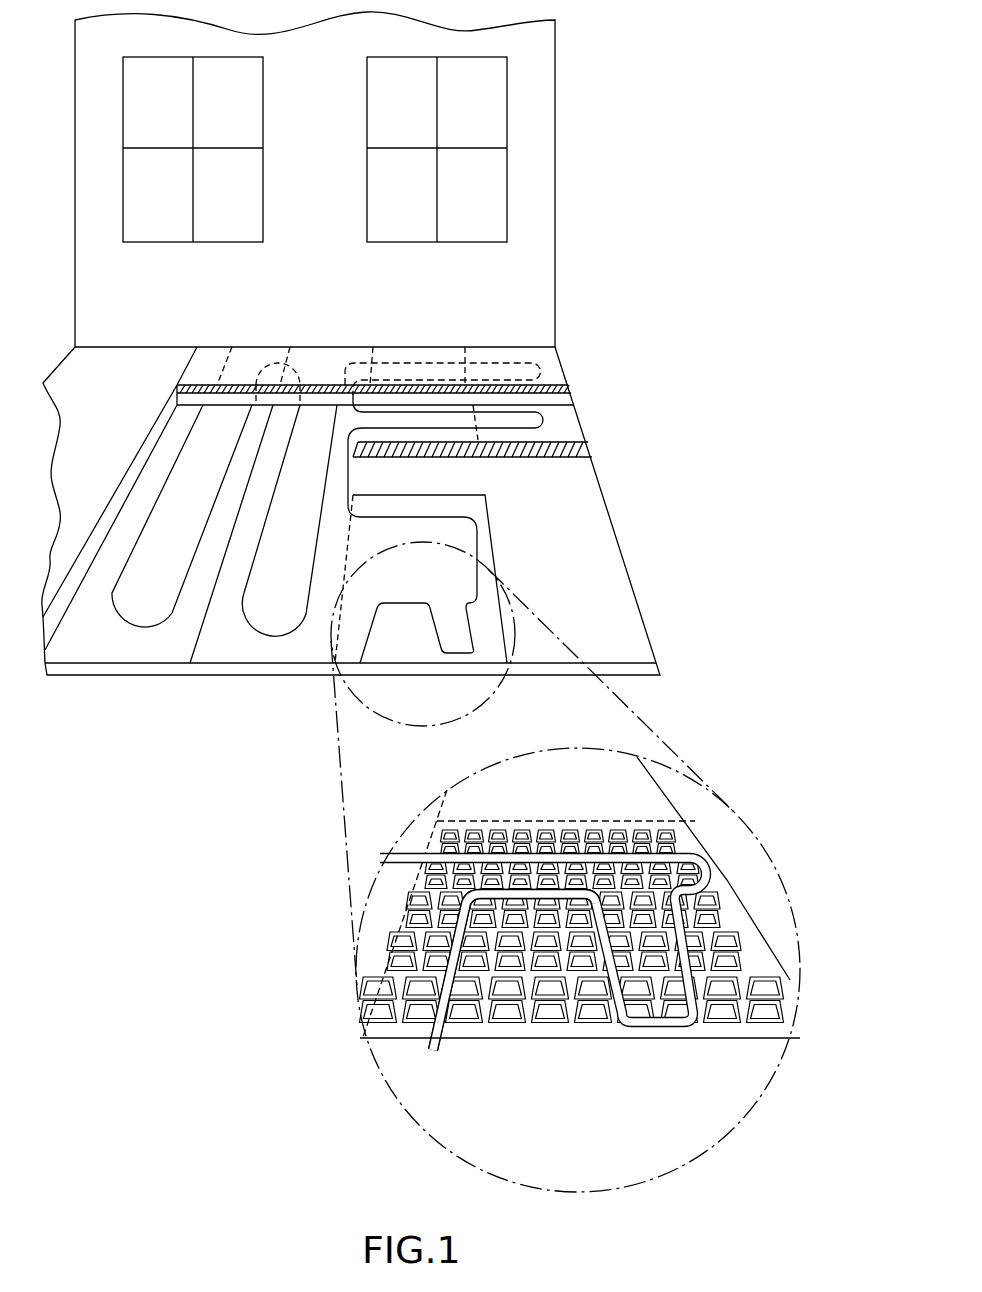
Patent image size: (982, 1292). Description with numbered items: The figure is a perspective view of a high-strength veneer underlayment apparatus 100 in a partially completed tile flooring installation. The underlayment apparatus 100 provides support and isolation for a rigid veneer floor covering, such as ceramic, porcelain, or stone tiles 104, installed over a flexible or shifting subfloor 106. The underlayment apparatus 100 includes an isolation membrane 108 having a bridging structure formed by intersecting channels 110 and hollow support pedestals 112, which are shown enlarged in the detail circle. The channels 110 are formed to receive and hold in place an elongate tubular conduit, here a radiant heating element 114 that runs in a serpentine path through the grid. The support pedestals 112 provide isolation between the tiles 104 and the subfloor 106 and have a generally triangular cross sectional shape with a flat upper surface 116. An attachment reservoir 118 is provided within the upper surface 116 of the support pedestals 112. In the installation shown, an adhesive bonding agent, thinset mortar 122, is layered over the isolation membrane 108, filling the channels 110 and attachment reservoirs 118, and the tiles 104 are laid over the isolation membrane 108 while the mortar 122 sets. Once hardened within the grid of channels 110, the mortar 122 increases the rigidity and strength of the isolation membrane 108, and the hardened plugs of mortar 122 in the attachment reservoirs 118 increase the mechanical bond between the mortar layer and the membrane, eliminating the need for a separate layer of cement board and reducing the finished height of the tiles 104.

The underlayment apparatus 100 is at (642, 456).
The tiles 104 is at (544, 372).
The subfloor 106 is at (605, 584).
The isolation membrane 108 is at (93, 641).
The channels 110 is at (538, 1024).
The support pedestals 112 is at (493, 1022).
The radiant heating element 114 is at (263, 638).
The upper surface 116 is at (733, 1008).
The attachment reservoir 118 is at (768, 962).
The thinset mortar 122 is at (578, 396).